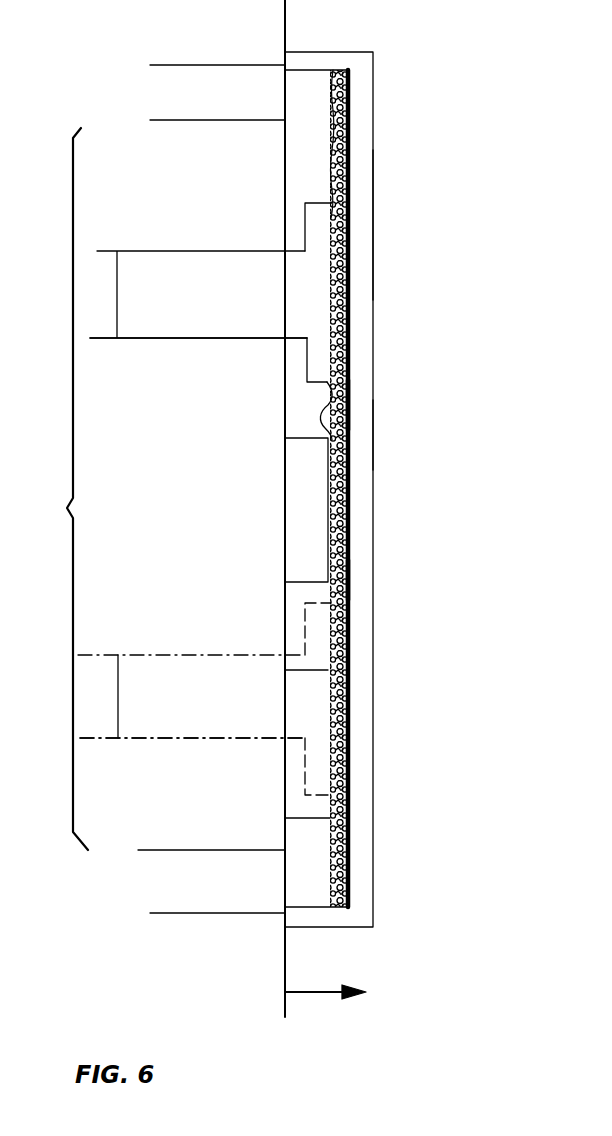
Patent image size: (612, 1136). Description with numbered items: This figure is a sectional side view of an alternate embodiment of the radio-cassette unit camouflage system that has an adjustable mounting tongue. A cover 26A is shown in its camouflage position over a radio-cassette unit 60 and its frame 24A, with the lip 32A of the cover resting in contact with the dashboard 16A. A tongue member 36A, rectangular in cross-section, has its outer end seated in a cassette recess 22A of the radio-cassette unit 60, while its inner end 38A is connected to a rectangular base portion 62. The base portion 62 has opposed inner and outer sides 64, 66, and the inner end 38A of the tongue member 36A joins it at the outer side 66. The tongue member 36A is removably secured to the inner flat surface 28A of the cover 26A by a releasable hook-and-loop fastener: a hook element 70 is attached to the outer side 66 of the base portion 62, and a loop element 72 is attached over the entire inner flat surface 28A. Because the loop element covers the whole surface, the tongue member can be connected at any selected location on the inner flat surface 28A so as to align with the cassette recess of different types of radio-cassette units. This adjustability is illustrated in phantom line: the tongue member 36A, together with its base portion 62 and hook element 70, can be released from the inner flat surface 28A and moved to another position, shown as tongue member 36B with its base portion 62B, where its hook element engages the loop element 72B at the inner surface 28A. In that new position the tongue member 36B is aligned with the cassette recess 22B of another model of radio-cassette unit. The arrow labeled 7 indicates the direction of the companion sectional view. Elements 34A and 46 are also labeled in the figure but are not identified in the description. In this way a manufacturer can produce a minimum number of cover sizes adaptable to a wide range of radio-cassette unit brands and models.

The dashboard 16A is at (243, 49).
The frame 24A is at (220, 100).
The lip 32A is at (318, 61).
The absorbent liner 34A is at (312, 118).
The cover 26A is at (420, 213).
The cassette recess 22A is at (100, 268).
The loop element 72 is at (303, 237).
The tongue member 36A is at (157, 316).
The inner end 38A is at (310, 316).
The inner side 64 is at (305, 369).
The base portion 62 is at (310, 392).
The outer side 66 is at (352, 402).
The hook element 70 is at (352, 436).
The block 46 is at (312, 525).
The inner flat surface 28A is at (350, 576).
The cassette recess 22B is at (93, 677).
The tongue member 36B is at (186, 672).
The loop element 72B is at (328, 703).
The base portion 62B is at (320, 772).
The radio-cassette unit 60 is at (57, 489).
The section line 7 is at (333, 1012).